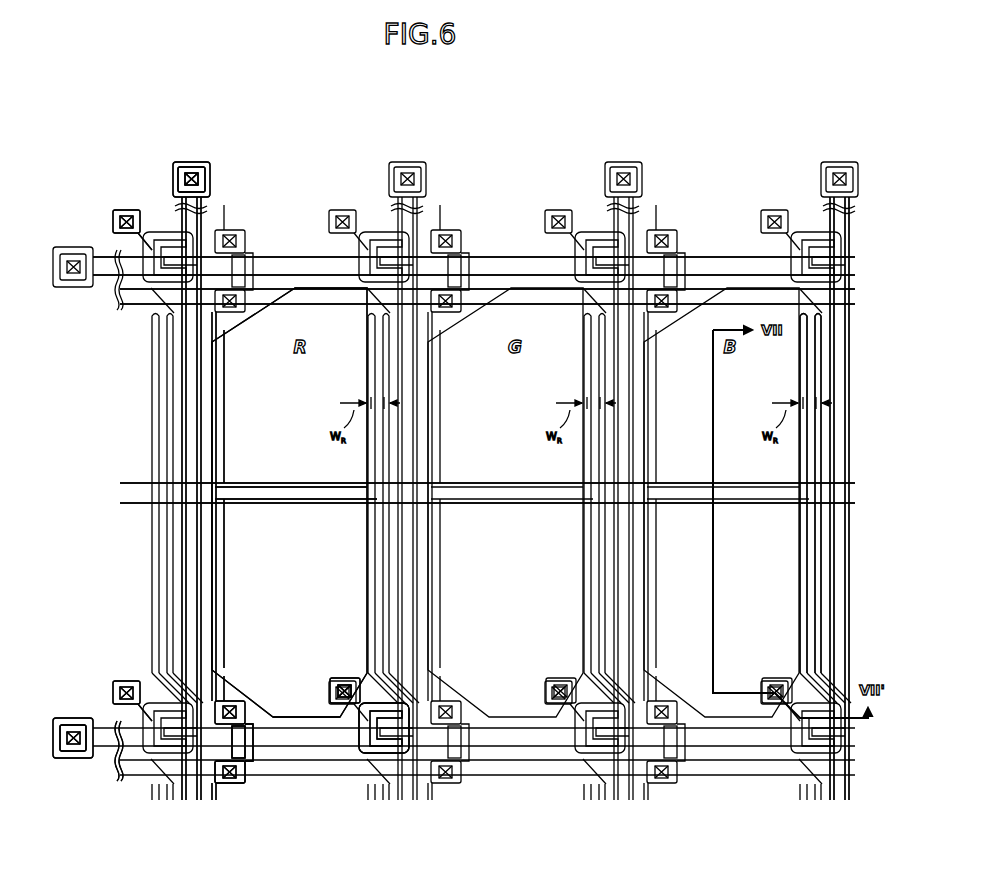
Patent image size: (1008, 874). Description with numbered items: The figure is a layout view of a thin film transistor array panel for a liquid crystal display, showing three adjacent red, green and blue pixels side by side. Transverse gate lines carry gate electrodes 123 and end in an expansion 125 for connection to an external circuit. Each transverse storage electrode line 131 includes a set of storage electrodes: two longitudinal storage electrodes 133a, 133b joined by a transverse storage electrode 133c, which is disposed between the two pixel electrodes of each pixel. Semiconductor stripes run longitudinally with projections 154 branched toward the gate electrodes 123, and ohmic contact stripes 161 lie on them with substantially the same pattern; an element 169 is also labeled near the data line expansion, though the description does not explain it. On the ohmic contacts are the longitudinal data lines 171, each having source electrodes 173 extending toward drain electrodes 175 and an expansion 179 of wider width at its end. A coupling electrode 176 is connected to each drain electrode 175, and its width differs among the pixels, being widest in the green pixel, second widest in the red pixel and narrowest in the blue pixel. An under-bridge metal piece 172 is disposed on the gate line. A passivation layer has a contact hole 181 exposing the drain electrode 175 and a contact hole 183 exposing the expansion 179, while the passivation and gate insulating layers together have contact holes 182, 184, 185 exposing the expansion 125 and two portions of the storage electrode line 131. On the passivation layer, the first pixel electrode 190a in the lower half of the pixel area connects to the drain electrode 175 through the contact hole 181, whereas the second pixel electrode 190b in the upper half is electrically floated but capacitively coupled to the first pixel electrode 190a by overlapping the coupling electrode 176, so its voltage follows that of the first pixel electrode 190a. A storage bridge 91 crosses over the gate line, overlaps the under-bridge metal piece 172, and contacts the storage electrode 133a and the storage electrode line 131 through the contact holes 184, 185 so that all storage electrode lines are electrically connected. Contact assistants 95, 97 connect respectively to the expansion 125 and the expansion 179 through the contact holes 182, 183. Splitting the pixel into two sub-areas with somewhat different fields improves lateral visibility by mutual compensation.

The storage bridge 91 is at (253, 760).
The contact assistant 95 is at (53, 745).
The contact assistant 97 is at (186, 163).
The gate electrode 123 is at (372, 746).
The expansion 125 is at (72, 758).
The storage electrode line 131 is at (263, 296).
The storage electrode 133a is at (216, 405).
The storage electrode 133b is at (822, 470).
The storage electrode 133c is at (251, 487).
The projection 154 is at (360, 752).
The ohmic contact stripe 161 is at (181, 456).
The ohmic contact 169 is at (177, 182).
The data line 171 is at (181, 537).
The under-bridge metal piece 172 is at (235, 740).
The source electrode 173 is at (388, 748).
The drain electrode 175 is at (334, 708).
The coupling electrode 176 is at (822, 561).
The expansion 179 is at (200, 162).
The contact hole 181 is at (343, 684).
The contact hole 182 is at (72, 717).
The contact hole 183 is at (206, 182).
The contact hole 184 is at (229, 703).
The contact hole 185 is at (232, 776).
The first pixel electrode 190a is at (290, 717).
The second pixel electrode 190b is at (216, 328).